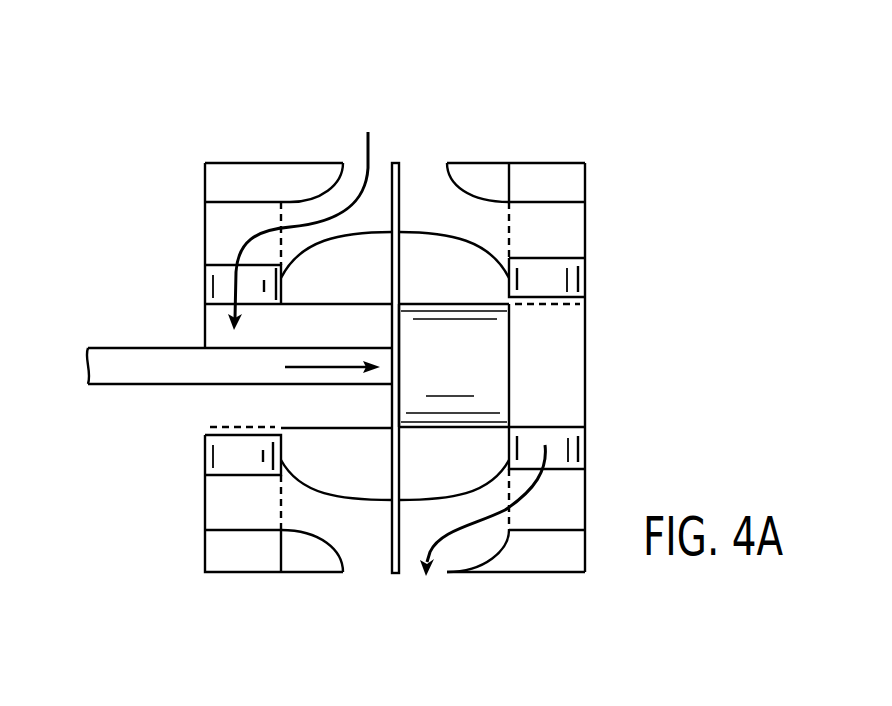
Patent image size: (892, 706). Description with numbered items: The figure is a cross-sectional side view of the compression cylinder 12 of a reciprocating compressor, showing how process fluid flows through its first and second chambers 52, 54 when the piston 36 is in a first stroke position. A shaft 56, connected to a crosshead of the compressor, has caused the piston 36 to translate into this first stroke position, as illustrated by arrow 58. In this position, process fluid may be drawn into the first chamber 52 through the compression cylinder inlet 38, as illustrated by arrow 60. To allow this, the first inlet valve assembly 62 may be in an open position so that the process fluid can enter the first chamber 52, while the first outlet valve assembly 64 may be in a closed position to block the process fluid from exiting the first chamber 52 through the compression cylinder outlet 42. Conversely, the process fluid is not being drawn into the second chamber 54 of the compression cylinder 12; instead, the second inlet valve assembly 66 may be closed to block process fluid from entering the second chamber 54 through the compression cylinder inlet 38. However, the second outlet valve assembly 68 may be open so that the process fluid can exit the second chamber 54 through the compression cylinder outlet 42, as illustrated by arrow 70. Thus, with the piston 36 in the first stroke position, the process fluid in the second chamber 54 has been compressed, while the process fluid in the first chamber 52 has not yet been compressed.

The compression cylinder 12 is at (614, 76).
The piston 36 is at (490, 345).
The compression cylinder inlet 38 is at (413, 78).
The compression cylinder outlet 42 is at (389, 612).
The first chamber 52 is at (316, 418).
The second chamber 54 is at (566, 393).
The shaft 56 is at (124, 356).
The arrow 58 is at (343, 367).
The arrow 60 is at (371, 150).
The first inlet valve assembly 62 is at (222, 285).
The first outlet valve assembly 64 is at (222, 455).
The second inlet valve assembly 66 is at (555, 281).
The second outlet valve assembly 68 is at (555, 450).
The arrow 70 is at (440, 540).